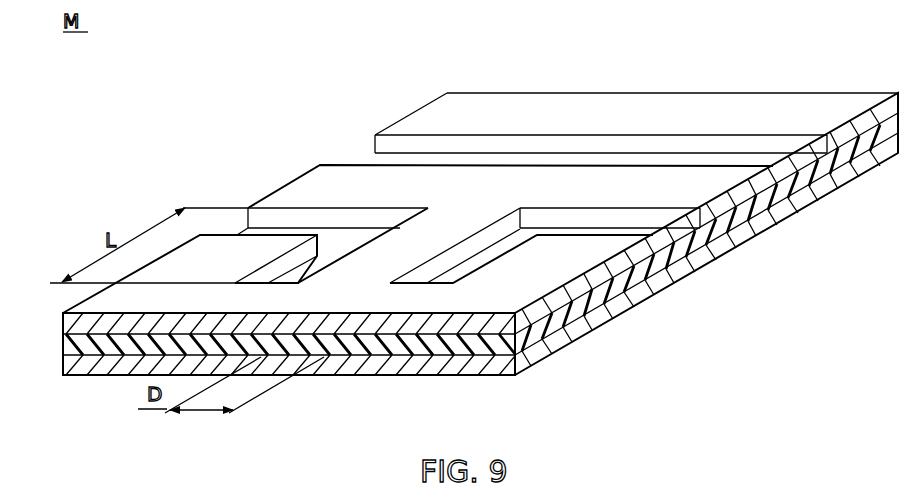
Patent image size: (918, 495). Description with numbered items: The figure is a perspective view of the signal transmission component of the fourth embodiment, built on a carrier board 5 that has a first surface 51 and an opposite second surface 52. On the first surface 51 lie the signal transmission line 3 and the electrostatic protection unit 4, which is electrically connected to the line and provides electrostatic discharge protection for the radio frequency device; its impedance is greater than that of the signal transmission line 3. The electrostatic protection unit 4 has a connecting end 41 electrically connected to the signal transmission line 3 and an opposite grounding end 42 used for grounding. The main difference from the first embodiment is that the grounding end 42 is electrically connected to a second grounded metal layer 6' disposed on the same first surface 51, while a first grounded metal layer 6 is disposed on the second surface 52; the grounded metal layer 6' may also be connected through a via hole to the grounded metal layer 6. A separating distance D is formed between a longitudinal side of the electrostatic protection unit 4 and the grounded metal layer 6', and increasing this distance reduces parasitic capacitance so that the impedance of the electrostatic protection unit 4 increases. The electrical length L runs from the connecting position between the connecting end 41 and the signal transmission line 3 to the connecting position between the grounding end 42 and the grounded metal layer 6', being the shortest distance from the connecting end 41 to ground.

The signal transmission line 3 is at (535, 174).
The electrostatic protection unit 4 is at (404, 231).
The connecting end 41 is at (467, 212).
The grounding end 42 is at (348, 280).
The carrier board 5 is at (806, 185).
The first surface 51 is at (788, 162).
The second surface 52 is at (777, 208).
The grounded metal layer 6 is at (480, 234).
The grounded metal layer 6' is at (458, 169).